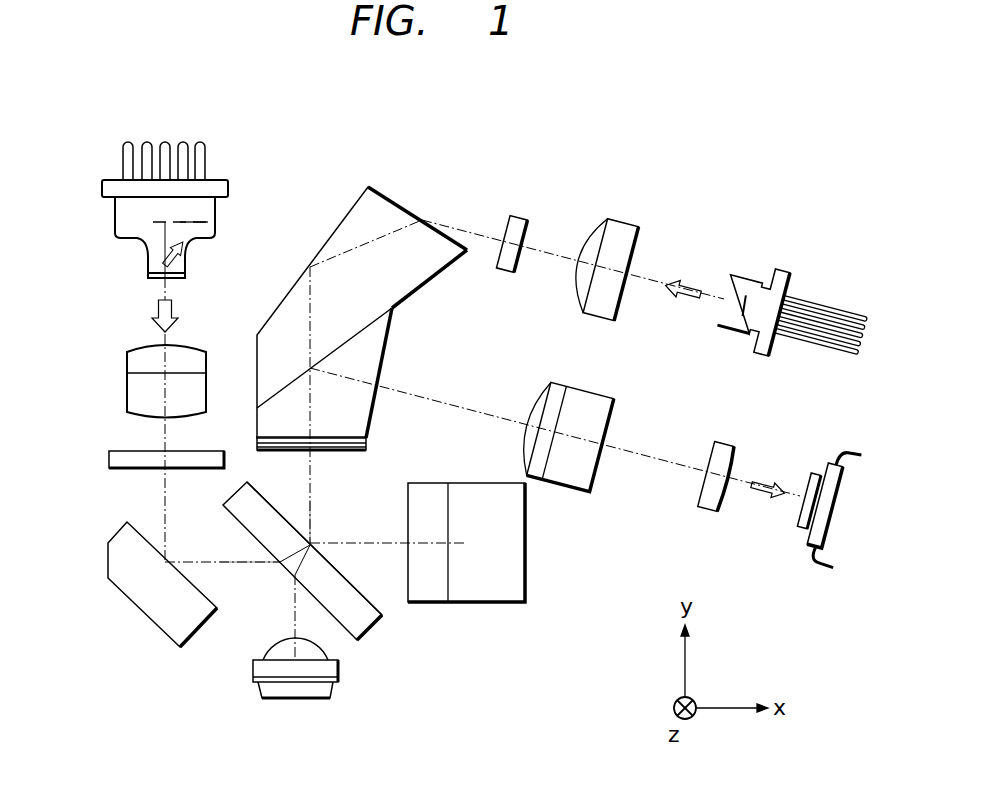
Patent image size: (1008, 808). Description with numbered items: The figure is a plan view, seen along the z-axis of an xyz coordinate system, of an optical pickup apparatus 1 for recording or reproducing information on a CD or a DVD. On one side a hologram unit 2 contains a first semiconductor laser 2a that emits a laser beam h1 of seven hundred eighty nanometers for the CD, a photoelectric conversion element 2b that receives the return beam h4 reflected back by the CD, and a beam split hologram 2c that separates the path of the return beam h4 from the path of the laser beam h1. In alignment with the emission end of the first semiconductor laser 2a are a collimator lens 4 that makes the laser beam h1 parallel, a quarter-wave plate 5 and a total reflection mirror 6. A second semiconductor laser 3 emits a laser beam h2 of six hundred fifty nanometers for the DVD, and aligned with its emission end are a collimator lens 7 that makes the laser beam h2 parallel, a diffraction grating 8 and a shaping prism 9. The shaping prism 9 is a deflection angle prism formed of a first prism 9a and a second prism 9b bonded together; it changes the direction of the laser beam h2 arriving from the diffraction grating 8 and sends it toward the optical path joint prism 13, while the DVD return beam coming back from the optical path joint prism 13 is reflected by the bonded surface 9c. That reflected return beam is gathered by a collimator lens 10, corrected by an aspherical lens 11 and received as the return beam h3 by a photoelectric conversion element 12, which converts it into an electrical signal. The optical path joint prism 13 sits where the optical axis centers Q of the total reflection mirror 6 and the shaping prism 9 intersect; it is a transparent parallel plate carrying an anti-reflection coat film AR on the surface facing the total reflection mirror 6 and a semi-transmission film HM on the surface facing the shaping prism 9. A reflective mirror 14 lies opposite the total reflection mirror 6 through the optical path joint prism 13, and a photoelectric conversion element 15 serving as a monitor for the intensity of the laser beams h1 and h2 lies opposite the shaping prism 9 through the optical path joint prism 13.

The optical pickup apparatus 1 is at (500, 144).
The hologram unit 2 is at (117, 225).
The first semiconductor laser 2a is at (152, 221).
The photoelectric conversion element 2b is at (196, 224).
The beam split hologram 2c is at (148, 277).
The second semiconductor laser 3 is at (750, 278).
The collimator lens 4 is at (135, 388).
The quarter-wave plate 5 is at (112, 458).
The total reflection mirror 6 is at (137, 595).
The collimator lens 7 is at (627, 220).
The diffraction grating 8 is at (520, 213).
The shaping prism 9 is at (321, 217).
The first prism 9a is at (425, 272).
The second prism 9b is at (367, 418).
The bonded surface 9c is at (363, 330).
The collimator lens 10 is at (587, 393).
The aspherical lens 11 is at (722, 443).
The photoelectric conversion element 12 is at (838, 500).
The optical path joint prism 13 is at (370, 625).
The reflective mirror 14 is at (487, 597).
The photoelectric conversion element 15 is at (302, 700).
The laser beam h1 is at (173, 307).
The laser beam h2 is at (692, 280).
The return beam h3 is at (765, 482).
The return beam h4 is at (186, 262).
The semi-transmission film HM is at (275, 503).
The anti-reflection coat film AR is at (243, 527).
The optical axis center Q is at (312, 472).